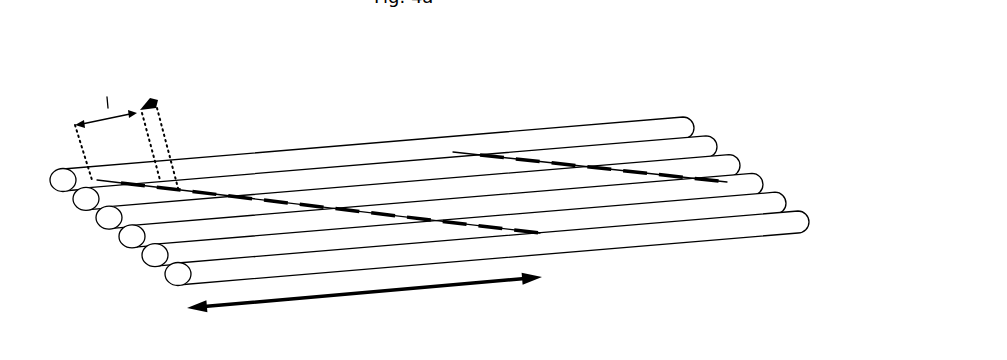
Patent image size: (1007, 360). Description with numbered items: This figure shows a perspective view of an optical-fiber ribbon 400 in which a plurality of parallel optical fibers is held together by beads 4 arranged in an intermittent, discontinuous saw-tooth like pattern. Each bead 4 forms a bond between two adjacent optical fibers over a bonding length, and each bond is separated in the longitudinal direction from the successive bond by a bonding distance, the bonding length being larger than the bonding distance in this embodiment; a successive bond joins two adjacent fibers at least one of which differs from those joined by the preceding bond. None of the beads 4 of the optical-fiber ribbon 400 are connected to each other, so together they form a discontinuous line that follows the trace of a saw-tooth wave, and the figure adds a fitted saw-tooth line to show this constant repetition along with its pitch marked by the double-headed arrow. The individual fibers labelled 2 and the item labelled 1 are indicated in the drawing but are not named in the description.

The optical-fiber ribbon 400 is at (691, 54).
The rod 2 is at (62, 183).
The bead 4 is at (245, 192).
The bundle 1 is at (493, 220).